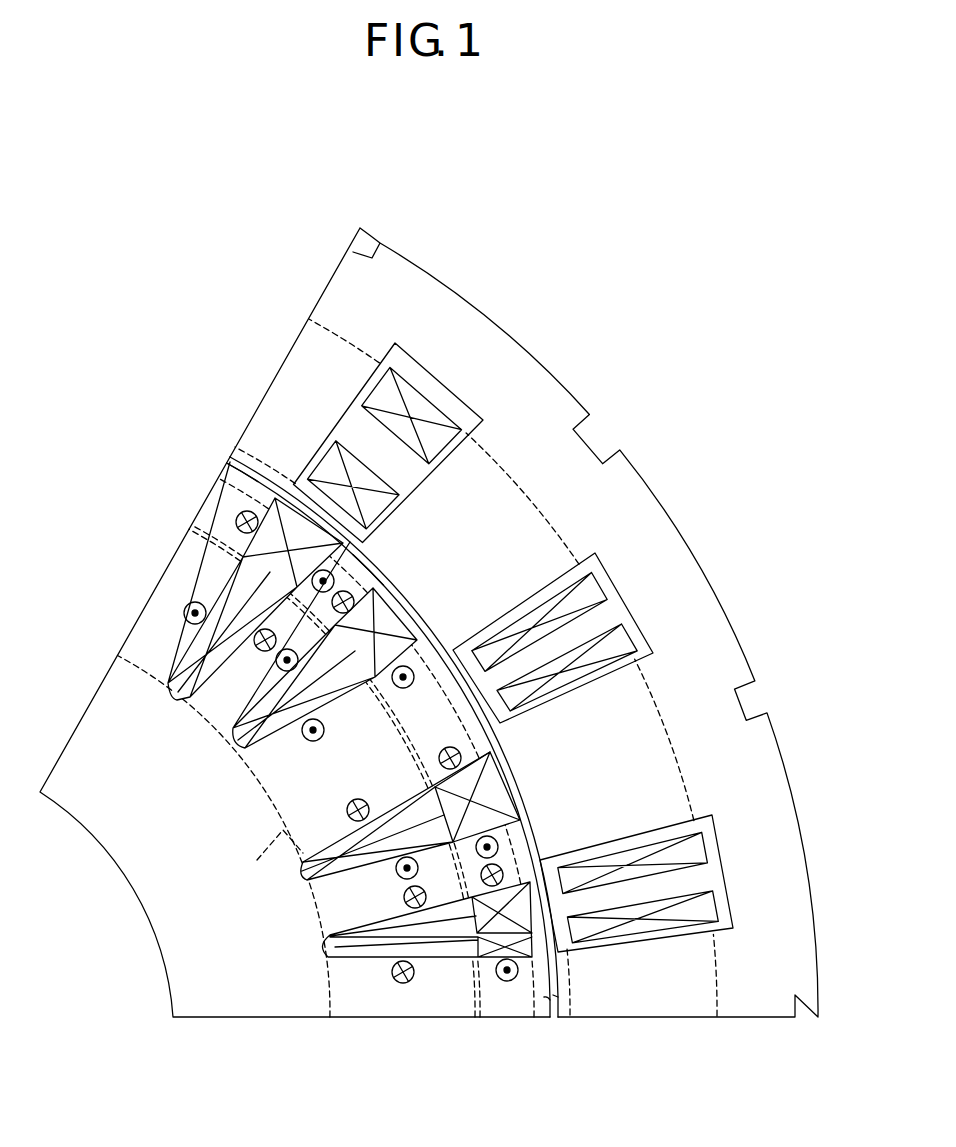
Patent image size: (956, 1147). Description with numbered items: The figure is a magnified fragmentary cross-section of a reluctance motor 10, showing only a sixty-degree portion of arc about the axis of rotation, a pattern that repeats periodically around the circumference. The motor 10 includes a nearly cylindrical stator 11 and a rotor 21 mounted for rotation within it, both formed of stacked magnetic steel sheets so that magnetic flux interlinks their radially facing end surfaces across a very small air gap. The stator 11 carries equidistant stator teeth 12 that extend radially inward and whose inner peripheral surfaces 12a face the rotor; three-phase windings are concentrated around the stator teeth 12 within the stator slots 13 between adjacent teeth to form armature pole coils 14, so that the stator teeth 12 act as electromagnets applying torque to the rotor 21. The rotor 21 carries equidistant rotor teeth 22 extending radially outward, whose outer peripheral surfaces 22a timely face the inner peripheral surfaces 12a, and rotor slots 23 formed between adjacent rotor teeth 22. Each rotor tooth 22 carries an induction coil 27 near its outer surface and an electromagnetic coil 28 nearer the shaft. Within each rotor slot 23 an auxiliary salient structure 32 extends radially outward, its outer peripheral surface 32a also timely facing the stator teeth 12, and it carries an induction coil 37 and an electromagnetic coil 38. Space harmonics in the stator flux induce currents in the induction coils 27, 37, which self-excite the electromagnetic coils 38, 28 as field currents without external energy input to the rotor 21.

The motor 10 is at (750, 400).
The stator 11 is at (483, 332).
The stator teeth 12 is at (657, 1000).
The inner peripheral surfaces 12a is at (551, 1004).
The stator slots 13 is at (356, 410).
The armature pole coils 14 is at (343, 441).
The rotor 21 is at (183, 943).
The rotor teeth 22 is at (167, 598).
The outer peripheral surfaces 22a is at (240, 456).
The rotor slots 23 is at (357, 946).
The induction coil 27 is at (492, 762).
The electromagnetic coil 28 is at (297, 873).
The auxiliary salient structures 32 is at (250, 675).
The outer peripheral surfaces 32a is at (370, 567).
The induction coil 37 is at (492, 807).
The electromagnetic coil 38 is at (433, 833).